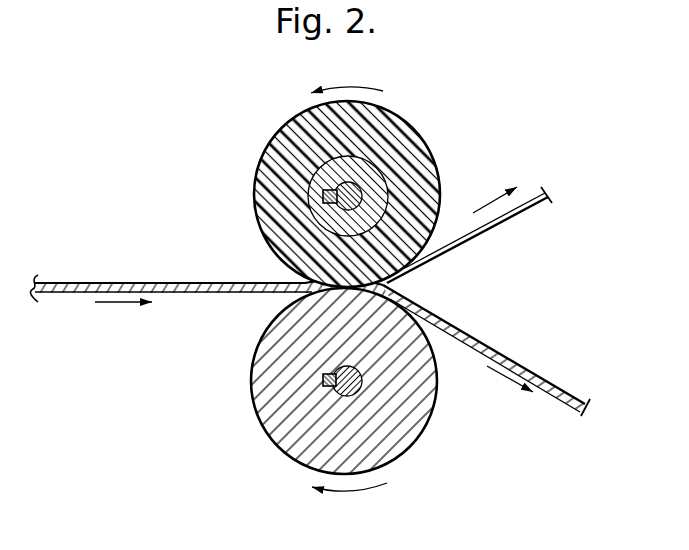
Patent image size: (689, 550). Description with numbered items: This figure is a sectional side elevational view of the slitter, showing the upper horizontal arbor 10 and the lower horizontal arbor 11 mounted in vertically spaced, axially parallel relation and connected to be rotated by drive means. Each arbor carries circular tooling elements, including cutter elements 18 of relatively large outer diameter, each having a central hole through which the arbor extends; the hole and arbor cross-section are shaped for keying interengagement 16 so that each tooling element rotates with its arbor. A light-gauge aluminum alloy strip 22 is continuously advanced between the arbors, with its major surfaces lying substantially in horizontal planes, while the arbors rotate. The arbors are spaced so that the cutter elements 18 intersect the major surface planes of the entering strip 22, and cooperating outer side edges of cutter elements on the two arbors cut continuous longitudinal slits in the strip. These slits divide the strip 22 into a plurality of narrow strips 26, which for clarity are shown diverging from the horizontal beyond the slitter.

The upper horizontal arbor 10 is at (361, 188).
The lower horizontal arbor 11 is at (362, 383).
The keying interengagement 16 is at (323, 197).
The cutter element 18 is at (410, 129).
The light-gauge aluminum alloy strip 22 is at (108, 283).
The narrow strips 26 is at (511, 218).